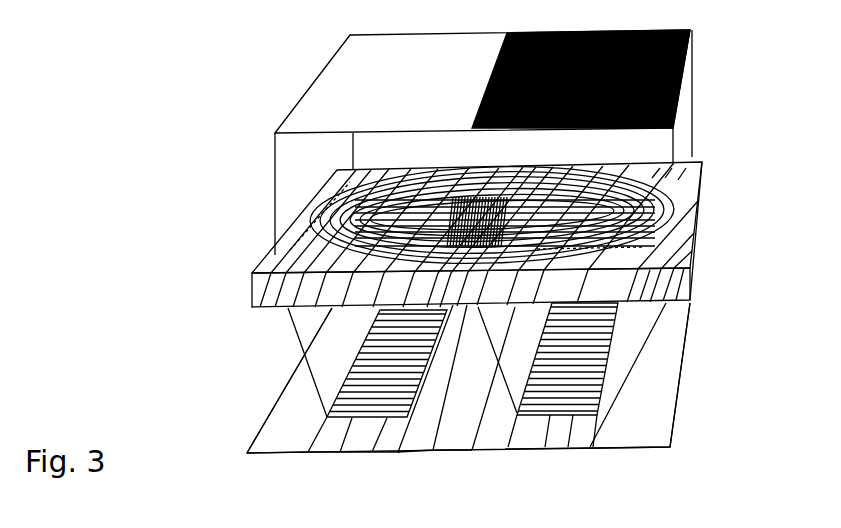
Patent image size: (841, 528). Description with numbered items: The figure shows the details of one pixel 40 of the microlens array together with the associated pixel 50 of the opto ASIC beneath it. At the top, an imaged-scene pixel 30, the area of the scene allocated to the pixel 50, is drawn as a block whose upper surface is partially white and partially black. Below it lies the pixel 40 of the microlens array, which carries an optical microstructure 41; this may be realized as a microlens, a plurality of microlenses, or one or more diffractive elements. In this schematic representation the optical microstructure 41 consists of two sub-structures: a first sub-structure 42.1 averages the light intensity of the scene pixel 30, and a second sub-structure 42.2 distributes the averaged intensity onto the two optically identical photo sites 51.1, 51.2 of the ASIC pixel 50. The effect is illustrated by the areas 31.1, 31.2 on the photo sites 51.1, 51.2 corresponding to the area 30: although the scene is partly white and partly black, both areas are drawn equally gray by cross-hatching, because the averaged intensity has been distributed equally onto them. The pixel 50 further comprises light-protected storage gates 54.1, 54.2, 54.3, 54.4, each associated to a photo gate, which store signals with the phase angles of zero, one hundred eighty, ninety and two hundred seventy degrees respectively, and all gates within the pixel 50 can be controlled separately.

The imaged-scene pixel 30 is at (300, 88).
The first area on photo site 31.1 is at (331, 392).
The second area on photo site 31.2 is at (594, 386).
The pixel of the microlens array 40 is at (240, 285).
The optical microstructure 41 is at (325, 229).
The first sub-structure 42.1 is at (660, 180).
The second sub-structure 42.2 is at (652, 283).
The pixel 50 is at (236, 429).
The first photo site 51.1 is at (402, 456).
The second photo site 51.2 is at (599, 450).
The first storage gate 54.1 is at (273, 440).
The second storage gate 54.2 is at (416, 441).
The third storage gate 54.3 is at (483, 442).
The fourth storage gate 54.4 is at (628, 433).